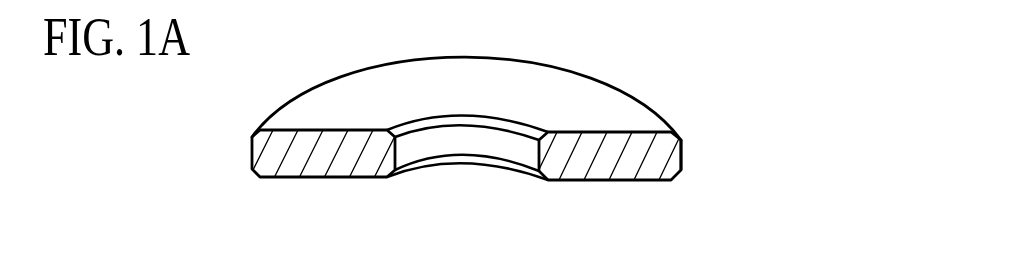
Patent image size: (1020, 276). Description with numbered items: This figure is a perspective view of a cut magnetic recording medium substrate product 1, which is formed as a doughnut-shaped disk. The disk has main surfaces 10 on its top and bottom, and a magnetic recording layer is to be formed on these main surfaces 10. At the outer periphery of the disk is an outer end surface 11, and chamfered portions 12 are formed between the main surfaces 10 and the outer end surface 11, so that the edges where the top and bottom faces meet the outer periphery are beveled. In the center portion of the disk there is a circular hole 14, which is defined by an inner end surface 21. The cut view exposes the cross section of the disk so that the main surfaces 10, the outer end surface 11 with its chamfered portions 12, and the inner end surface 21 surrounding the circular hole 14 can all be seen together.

The magnetic recording medium substrate product 1 is at (656, 66).
The main surfaces 10 is at (650, 118).
The outer end surface 11 is at (681, 157).
The chamfered portions 12 is at (681, 140).
The circular hole 14 is at (477, 179).
The inner end surface 21 is at (410, 142).